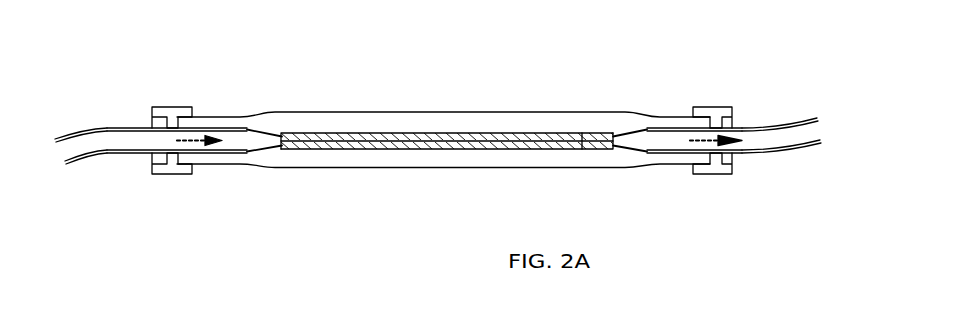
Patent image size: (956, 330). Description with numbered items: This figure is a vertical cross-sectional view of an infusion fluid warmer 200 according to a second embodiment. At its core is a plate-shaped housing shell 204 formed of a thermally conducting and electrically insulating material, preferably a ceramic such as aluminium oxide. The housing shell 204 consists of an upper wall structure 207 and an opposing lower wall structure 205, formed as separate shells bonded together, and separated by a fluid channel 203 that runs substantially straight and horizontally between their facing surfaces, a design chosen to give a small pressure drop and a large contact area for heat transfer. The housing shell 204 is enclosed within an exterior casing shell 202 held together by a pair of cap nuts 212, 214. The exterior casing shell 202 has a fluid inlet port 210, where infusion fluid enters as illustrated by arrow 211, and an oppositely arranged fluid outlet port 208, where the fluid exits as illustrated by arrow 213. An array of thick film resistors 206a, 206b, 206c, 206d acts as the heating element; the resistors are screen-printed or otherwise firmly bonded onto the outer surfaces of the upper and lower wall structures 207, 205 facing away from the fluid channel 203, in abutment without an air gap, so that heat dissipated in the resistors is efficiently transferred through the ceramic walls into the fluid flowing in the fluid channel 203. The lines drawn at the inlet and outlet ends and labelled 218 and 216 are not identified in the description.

The infusion fluid warmer 200 is at (439, 175).
The exterior casing shell 202 is at (443, 90).
The fluid channel 203 is at (422, 177).
The housing shell 204 is at (447, 104).
The lower wall structure 205 is at (482, 179).
The thick film resistor 206a is at (377, 96).
The thick film resistor 206b is at (523, 105).
The thick film resistor 206c is at (516, 169).
The thick film resistor 206d is at (365, 165).
The upper wall structure 207 is at (629, 95).
The fluid outlet port 208 is at (661, 163).
The fluid inlet port 210 is at (215, 163).
The arrow 211 is at (186, 118).
The cap nut 212 is at (137, 110).
The arrow 213 is at (443, 125).
The cap nut 214 is at (752, 117).
The outlet tube 216 is at (739, 168).
The inlet tube end 218 is at (84, 167).